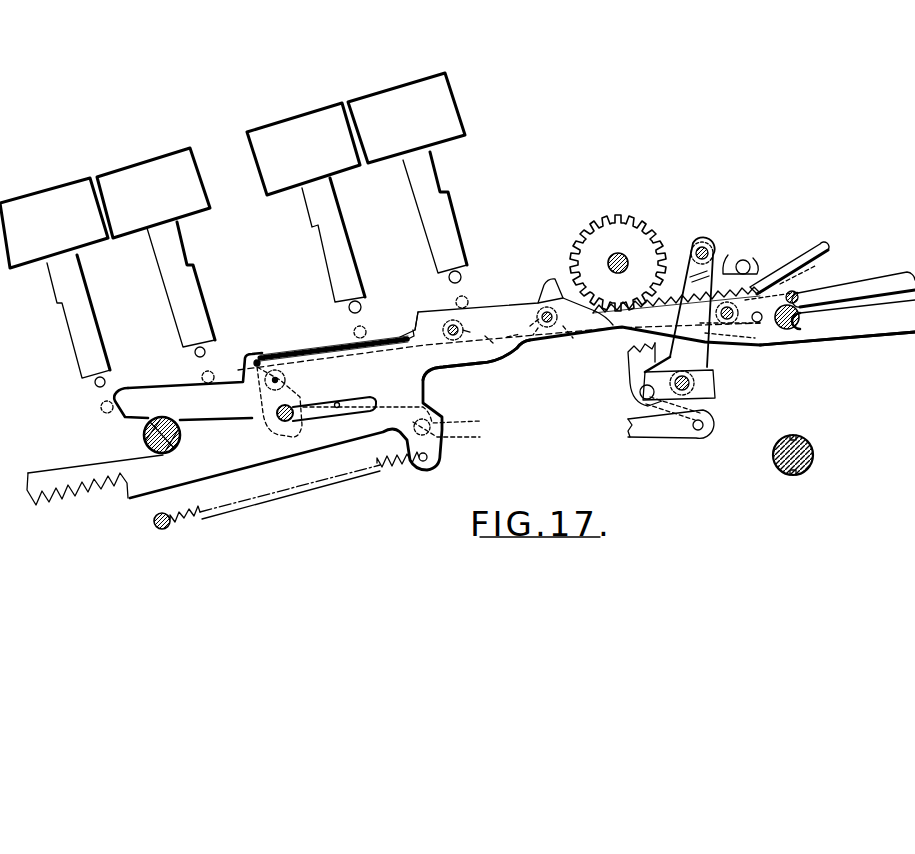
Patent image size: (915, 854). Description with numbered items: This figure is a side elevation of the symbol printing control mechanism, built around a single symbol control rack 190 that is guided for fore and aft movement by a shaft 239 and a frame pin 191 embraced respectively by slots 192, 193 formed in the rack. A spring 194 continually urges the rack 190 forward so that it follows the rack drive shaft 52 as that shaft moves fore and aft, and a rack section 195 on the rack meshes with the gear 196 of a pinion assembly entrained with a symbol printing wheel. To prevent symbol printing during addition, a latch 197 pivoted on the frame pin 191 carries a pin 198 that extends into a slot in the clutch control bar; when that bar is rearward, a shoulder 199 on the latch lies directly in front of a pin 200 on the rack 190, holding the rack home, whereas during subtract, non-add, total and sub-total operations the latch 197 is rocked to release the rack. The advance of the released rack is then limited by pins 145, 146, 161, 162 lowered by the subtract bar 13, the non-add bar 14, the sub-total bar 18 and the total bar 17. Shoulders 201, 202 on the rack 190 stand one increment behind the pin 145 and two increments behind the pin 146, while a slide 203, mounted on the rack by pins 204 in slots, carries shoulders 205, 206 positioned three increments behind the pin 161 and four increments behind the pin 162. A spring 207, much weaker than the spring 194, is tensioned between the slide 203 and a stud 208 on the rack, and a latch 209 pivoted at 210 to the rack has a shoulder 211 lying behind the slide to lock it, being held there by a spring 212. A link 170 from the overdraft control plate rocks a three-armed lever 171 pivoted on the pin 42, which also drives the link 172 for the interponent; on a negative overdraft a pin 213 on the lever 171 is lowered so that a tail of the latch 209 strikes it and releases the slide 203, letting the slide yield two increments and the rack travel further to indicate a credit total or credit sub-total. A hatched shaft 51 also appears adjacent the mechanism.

The subtract bar 13 is at (44, 189).
The non-add bar 14 is at (140, 156).
The total bar 17 is at (393, 83).
The sub-total bar 18 is at (300, 111).
The pin 145 is at (95, 386).
The pin 146 is at (192, 355).
The pin 161 is at (345, 308).
The pin 162 is at (466, 283).
The shoulder 201 is at (116, 386).
The shoulder 202 is at (256, 360).
The stud 208 is at (262, 352).
The spring 207 is at (350, 342).
The rack drive shaft 52 is at (144, 435).
The pin 198 is at (265, 402).
The frame pin 191 is at (277, 422).
The slot 193 is at (345, 400).
The latch 197 is at (436, 413).
The shoulder 199 is at (440, 437).
The pin 200 is at (465, 428).
The symbol control rack 190 is at (484, 366).
The pins 204 is at (518, 348).
The spring 194 is at (302, 493).
The slide 203 is at (491, 324).
The shoulder 205 is at (414, 320).
The shoulder 206 is at (537, 287).
The shoulder 211 is at (612, 340).
The gear 196 is at (650, 240).
The rack section 195 is at (683, 250).
The pin 213 is at (746, 254).
The latch 209 is at (786, 256).
The spring 212 is at (812, 271).
The slot 192 is at (852, 300).
The shaft 239 is at (788, 332).
The pivot 210 is at (760, 342).
The three-armed lever 171 is at (730, 345).
The link 172 is at (629, 368).
The pin 42 is at (716, 390).
The link 170 is at (641, 438).
The shaft 51 is at (813, 452).